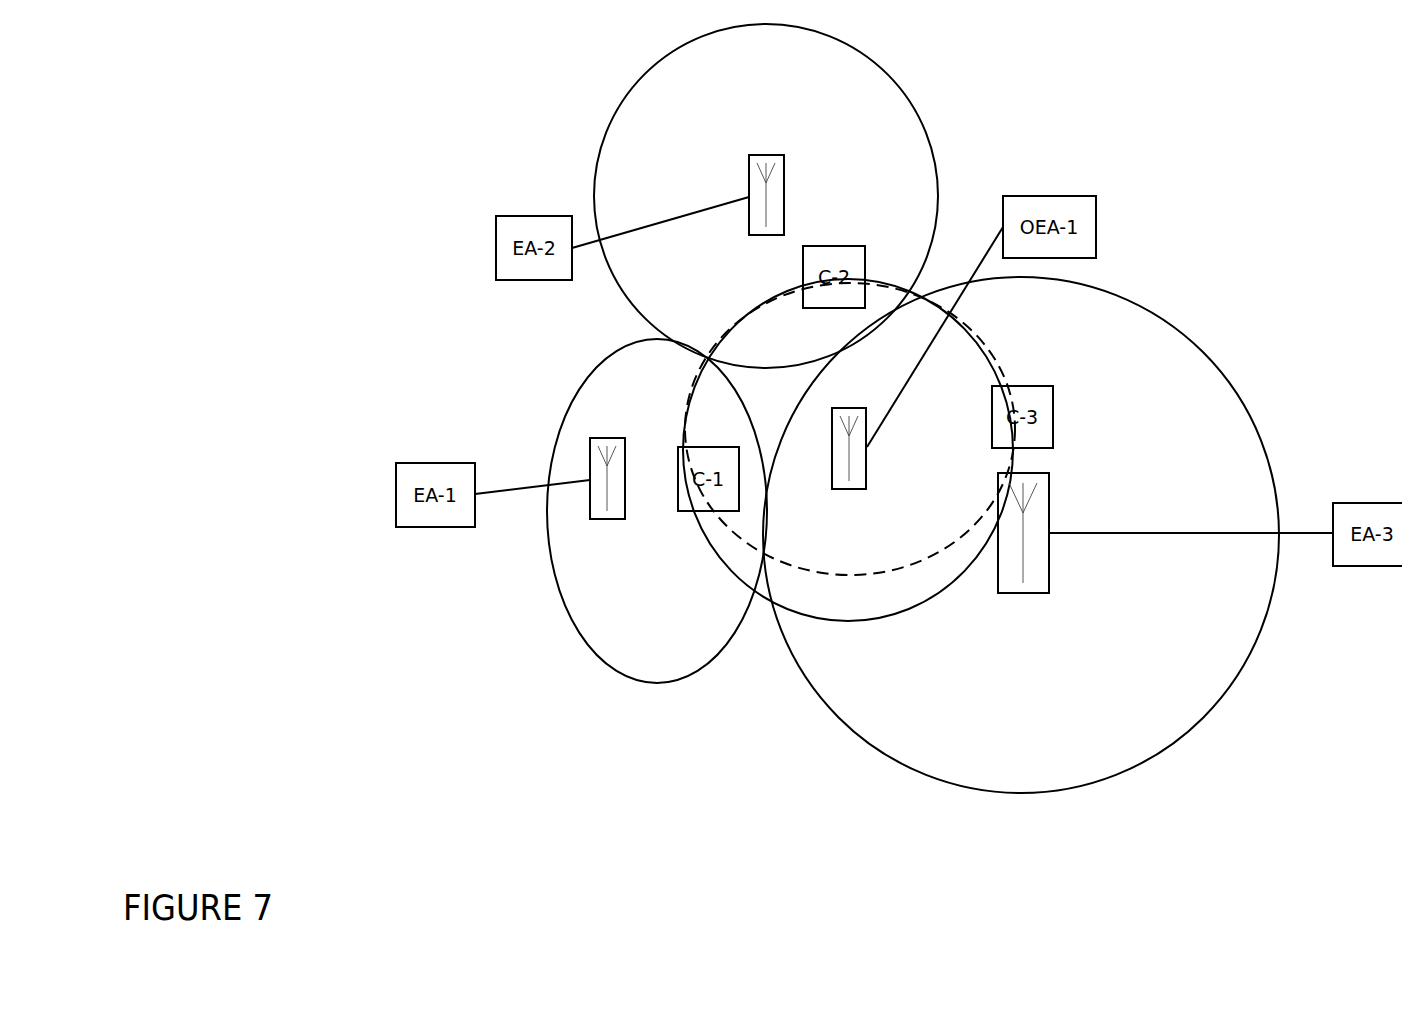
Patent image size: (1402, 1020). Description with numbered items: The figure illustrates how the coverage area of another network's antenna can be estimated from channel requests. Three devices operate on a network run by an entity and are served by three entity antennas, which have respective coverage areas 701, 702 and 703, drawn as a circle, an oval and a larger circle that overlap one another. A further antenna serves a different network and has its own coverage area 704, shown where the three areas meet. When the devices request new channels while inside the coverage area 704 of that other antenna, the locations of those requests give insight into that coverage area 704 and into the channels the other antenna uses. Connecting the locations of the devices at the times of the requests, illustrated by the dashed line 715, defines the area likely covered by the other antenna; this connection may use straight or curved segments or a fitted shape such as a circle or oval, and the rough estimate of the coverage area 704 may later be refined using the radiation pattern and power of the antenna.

The coverage area 701 is at (615, 400).
The coverage area 702 is at (652, 114).
The coverage area 703 is at (882, 713).
The coverage area 704 is at (762, 341).
The line 715 is at (848, 578).